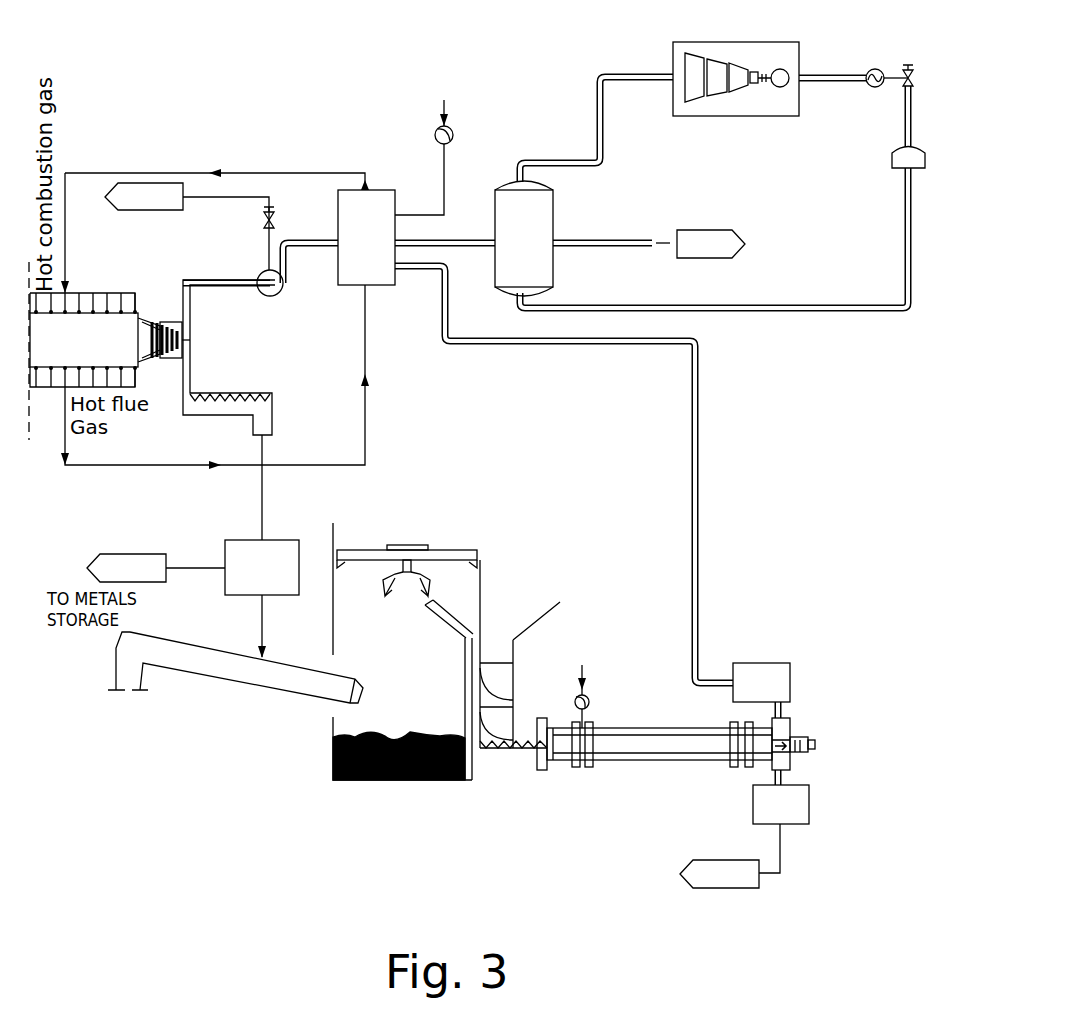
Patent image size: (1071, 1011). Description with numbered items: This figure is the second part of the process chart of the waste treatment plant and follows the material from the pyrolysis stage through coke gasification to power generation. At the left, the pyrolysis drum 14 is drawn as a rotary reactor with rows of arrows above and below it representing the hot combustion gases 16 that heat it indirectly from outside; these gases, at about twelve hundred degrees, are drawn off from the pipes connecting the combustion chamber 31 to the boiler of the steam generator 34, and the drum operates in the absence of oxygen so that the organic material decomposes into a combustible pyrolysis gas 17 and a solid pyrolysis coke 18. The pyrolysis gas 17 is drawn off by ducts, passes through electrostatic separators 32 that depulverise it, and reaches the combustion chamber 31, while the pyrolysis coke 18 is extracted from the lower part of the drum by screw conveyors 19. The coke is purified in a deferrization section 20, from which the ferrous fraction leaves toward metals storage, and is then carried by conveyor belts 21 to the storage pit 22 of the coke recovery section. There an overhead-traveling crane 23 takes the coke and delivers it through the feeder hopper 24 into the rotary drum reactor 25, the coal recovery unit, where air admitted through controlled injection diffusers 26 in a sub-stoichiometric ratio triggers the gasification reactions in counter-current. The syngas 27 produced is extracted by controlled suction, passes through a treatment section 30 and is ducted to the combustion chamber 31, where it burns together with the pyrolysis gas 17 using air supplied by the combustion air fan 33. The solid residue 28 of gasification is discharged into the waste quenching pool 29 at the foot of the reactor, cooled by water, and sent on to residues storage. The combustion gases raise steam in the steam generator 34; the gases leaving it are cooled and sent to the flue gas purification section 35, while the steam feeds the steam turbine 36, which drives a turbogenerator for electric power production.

The pyrolysis drum 14 is at (90, 351).
The hot combustion gases 16 is at (125, 172).
The pyrolysis gas 17 is at (214, 294).
The pyrolysis coke 18 is at (190, 378).
The screw conveyors 19 is at (208, 412).
The deferrization section 20 is at (247, 545).
The conveyor belts 21 is at (222, 665).
The storage pit 22 is at (412, 724).
The overhead-traveling crane 23 is at (437, 555).
The feeder hopper 24 is at (540, 612).
The rotary drum reactor 25 is at (635, 755).
The controlled injection diffusers 26 is at (590, 697).
The syngas 27 is at (534, 345).
The residue 28 is at (792, 782).
The waste quenching pool 29 is at (808, 812).
The treatment section 30 is at (785, 672).
The combustion chamber 31 is at (374, 275).
The electrostatic separators 32 is at (278, 295).
The combustion air fan 33 is at (435, 130).
The steam generator 34 is at (540, 253).
The flue gas purification section 35 is at (690, 240).
The steam turbine 36 is at (680, 50).